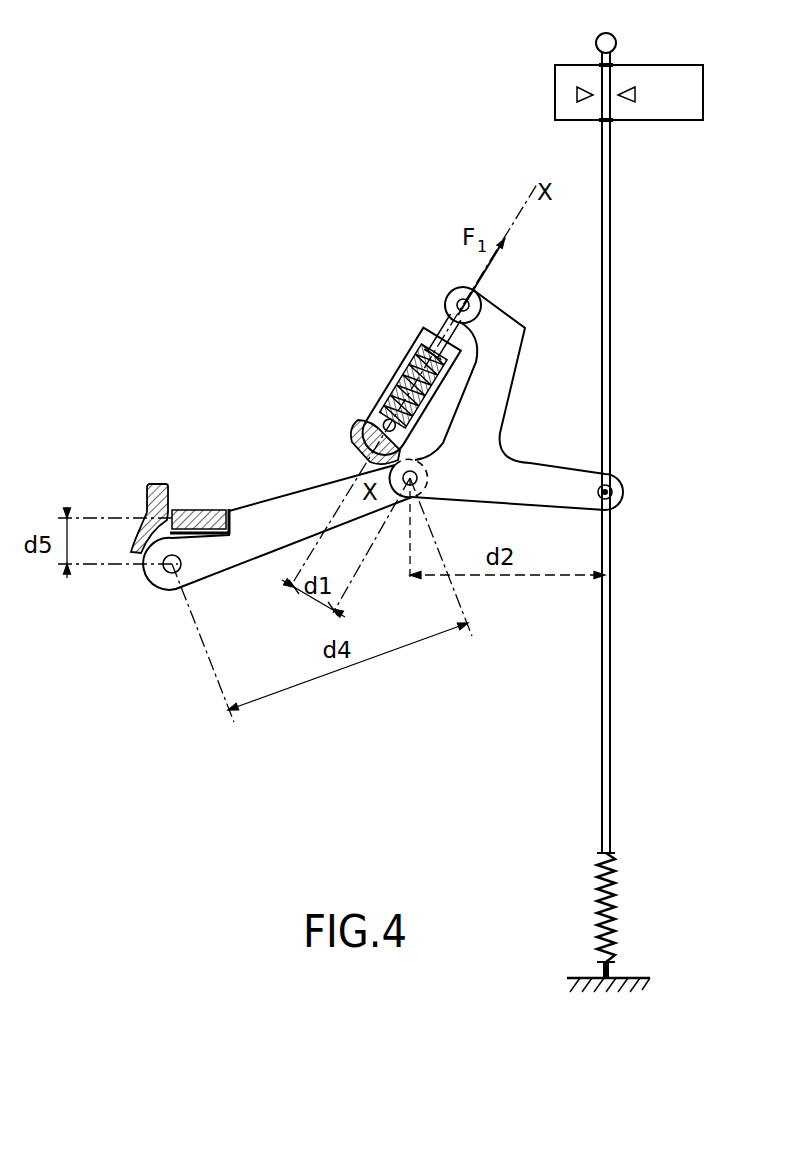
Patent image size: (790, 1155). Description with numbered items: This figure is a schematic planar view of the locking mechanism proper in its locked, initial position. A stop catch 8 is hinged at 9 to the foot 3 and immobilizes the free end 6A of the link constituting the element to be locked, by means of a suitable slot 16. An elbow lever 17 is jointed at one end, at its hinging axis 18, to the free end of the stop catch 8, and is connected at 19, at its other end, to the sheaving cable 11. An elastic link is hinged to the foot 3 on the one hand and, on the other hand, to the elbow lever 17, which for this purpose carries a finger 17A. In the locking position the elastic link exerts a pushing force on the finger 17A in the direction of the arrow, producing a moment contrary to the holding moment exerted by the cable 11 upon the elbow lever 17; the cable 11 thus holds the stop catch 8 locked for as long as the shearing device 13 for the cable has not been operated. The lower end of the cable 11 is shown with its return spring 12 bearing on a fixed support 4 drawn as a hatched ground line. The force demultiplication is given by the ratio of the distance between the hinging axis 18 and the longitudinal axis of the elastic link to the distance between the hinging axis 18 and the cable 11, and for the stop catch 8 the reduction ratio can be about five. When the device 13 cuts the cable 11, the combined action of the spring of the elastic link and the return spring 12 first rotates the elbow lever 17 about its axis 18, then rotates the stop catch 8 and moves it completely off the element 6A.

The foot 3 is at (150, 505).
The fixed support 4 is at (639, 978).
The free end of the link 6A is at (188, 508).
The stop catch 8 is at (278, 553).
The hinge of the stop catch 9 is at (161, 584).
The sheaving cable 11 is at (610, 340).
The return spring 12 is at (615, 900).
The shearing device 13 is at (620, 79).
The slot 16 is at (240, 521).
The elbow lever 17 is at (524, 517).
The finger 17A is at (512, 326).
The hinging axis of the elbow lever 18 is at (503, 452).
The connection of the elbow lever to the cable 19 is at (620, 485).